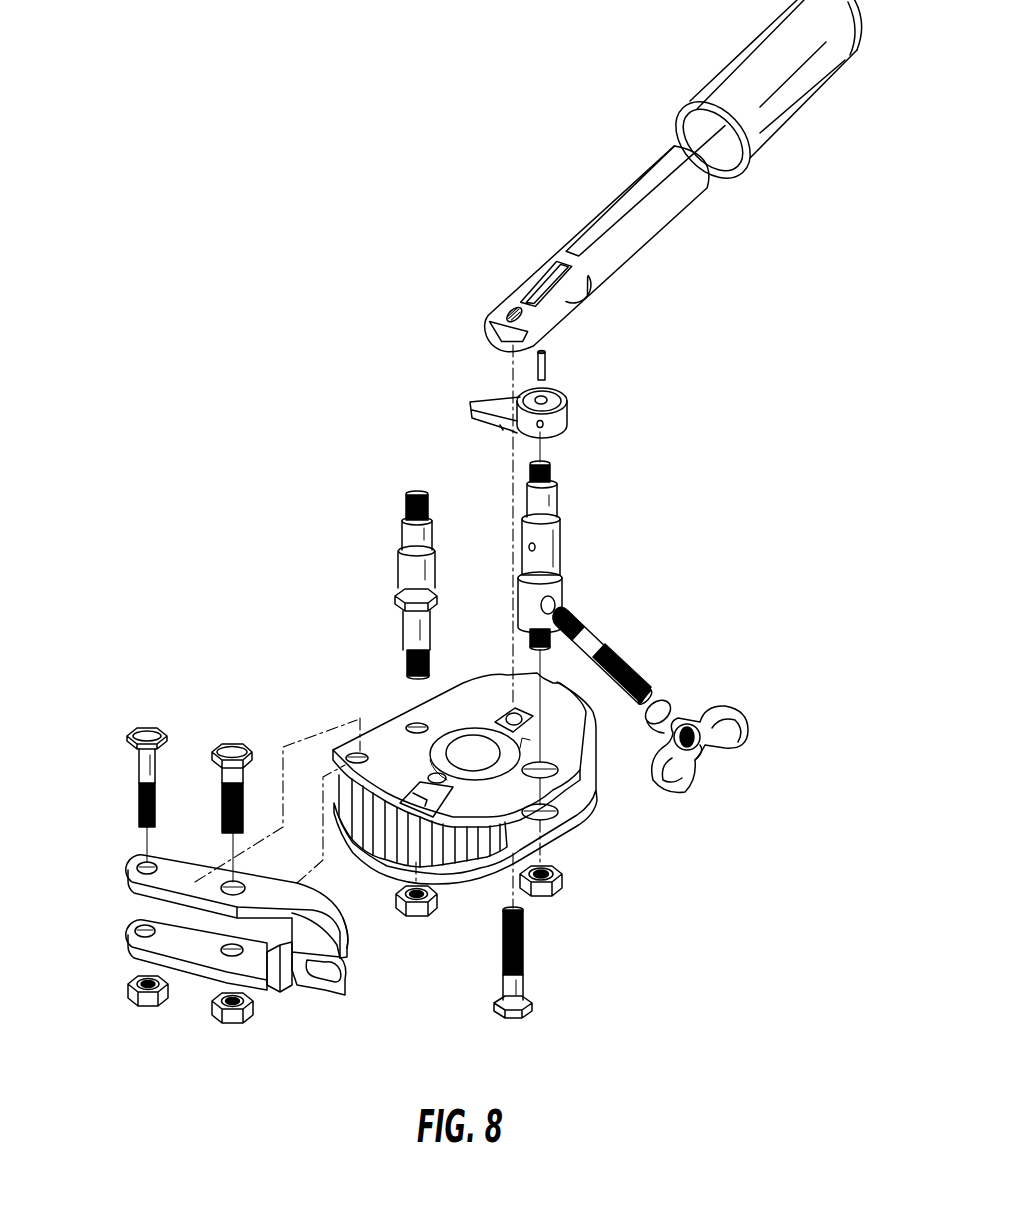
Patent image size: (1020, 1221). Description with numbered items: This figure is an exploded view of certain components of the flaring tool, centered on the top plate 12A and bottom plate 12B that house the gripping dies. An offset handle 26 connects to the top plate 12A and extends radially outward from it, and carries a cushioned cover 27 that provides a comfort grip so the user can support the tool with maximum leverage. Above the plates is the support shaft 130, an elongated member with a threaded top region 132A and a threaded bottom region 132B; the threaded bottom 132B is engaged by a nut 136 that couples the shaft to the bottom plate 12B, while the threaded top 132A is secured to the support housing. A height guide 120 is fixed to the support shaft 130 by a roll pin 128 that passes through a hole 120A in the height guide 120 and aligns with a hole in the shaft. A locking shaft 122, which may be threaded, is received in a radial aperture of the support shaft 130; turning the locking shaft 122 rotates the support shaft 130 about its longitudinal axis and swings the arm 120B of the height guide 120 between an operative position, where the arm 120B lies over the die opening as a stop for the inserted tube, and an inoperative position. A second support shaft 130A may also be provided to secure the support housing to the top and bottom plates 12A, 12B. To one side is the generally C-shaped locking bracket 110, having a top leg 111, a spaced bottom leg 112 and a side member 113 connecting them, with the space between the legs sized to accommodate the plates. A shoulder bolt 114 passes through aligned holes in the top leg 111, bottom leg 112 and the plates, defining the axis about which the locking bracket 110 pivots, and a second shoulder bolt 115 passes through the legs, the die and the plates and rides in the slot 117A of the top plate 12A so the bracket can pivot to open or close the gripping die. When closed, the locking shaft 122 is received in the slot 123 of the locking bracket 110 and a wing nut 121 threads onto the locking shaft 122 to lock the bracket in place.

The cushioned cover 27 is at (760, 29).
The offset handle 26 is at (636, 168).
The roll pin 128 is at (551, 346).
The height guide 120 is at (544, 404).
The hole 120A is at (545, 396).
The arm 120B is at (497, 400).
The support shaft 130 is at (545, 546).
The threaded top region 132A is at (532, 472).
The threaded bottom region 132B is at (527, 633).
The second support shaft 130A is at (393, 572).
The locking shaft 122 is at (601, 631).
The wing nut 121 is at (676, 792).
The top plate 12A is at (459, 783).
The bottom plate 12B is at (567, 830).
The slot 117A is at (415, 800).
The nut 136 is at (549, 896).
The locking bracket 110 is at (225, 869).
The top leg 111 is at (187, 872).
The bottom leg 112 is at (203, 947).
The side member 113 is at (347, 950).
The slot 123 is at (338, 977).
The shoulder bolt 114 is at (141, 726).
The second shoulder bolt 115 is at (233, 741).